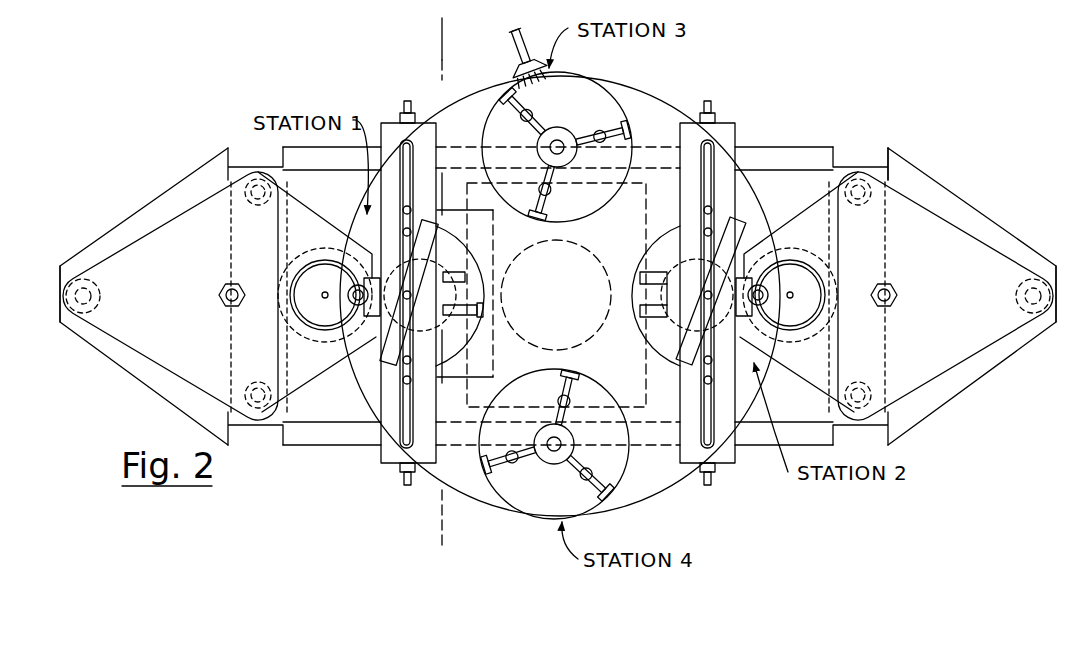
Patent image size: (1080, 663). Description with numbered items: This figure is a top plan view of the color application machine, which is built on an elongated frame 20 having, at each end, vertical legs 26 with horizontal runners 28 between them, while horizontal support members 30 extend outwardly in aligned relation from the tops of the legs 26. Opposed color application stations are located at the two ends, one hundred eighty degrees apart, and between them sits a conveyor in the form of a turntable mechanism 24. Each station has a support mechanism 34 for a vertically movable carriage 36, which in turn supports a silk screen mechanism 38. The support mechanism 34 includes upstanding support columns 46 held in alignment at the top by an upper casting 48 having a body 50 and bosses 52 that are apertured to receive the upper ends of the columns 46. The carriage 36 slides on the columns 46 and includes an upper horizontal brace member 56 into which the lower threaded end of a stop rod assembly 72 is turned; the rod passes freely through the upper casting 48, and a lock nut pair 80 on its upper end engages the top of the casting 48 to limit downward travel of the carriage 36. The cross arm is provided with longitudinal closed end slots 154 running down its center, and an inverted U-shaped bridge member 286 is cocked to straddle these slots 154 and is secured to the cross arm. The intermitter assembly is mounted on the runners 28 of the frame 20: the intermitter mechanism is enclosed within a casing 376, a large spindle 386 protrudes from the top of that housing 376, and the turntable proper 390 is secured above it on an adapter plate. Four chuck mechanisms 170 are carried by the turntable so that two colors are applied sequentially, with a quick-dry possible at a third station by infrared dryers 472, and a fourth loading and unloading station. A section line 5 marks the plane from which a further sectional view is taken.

The section line 5- 5 is at (442, 25).
The frame 20 is at (900, 134).
The turntable mechanism 24 is at (463, 504).
The vertical legs 26 is at (230, 150).
The horizontal runners 28 is at (326, 442).
The horizontal support members 30 is at (196, 176).
The support mechanism 34 is at (66, 246).
The vertically movable carriage 36 is at (302, 392).
The silk screen mechanism 38 is at (481, 252).
The support columns 46 is at (92, 282).
The upper casting 48 is at (170, 230).
The body 50 is at (167, 302).
The bosses 52 is at (100, 308).
The horizontal brace member 56 is at (322, 231).
The stop rod assembly 72 is at (230, 290).
The lock nut pair 80 is at (260, 270).
The closed end slots 154 is at (410, 430).
The chuck mechanisms 170 is at (590, 99).
The bridge member 286 is at (388, 367).
The casing 376 is at (640, 229).
The spindle 386 is at (574, 308).
The turntable 390 is at (652, 498).
The infrared dryers 472 is at (519, 56).